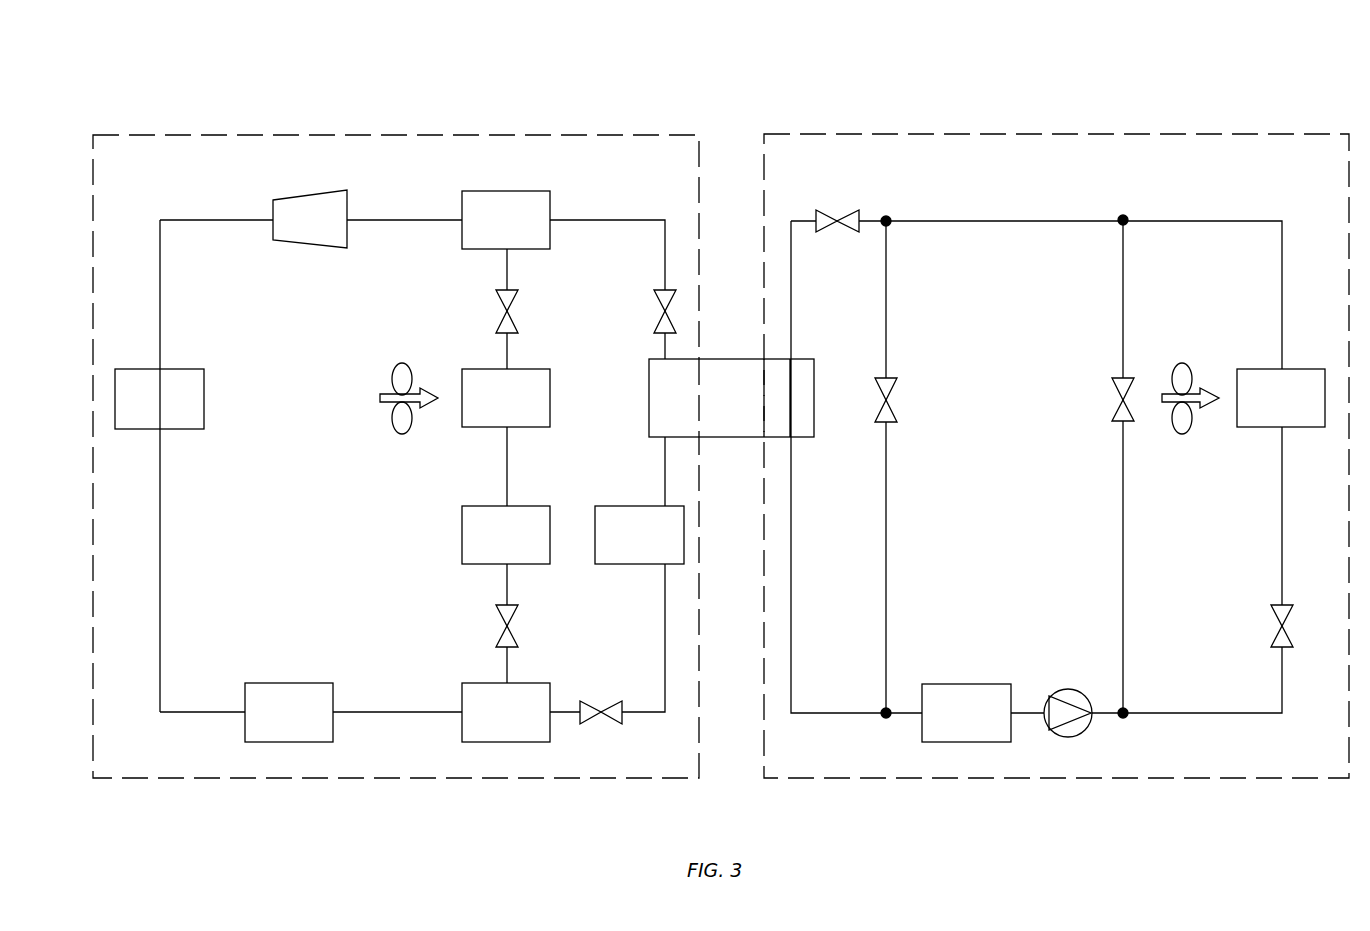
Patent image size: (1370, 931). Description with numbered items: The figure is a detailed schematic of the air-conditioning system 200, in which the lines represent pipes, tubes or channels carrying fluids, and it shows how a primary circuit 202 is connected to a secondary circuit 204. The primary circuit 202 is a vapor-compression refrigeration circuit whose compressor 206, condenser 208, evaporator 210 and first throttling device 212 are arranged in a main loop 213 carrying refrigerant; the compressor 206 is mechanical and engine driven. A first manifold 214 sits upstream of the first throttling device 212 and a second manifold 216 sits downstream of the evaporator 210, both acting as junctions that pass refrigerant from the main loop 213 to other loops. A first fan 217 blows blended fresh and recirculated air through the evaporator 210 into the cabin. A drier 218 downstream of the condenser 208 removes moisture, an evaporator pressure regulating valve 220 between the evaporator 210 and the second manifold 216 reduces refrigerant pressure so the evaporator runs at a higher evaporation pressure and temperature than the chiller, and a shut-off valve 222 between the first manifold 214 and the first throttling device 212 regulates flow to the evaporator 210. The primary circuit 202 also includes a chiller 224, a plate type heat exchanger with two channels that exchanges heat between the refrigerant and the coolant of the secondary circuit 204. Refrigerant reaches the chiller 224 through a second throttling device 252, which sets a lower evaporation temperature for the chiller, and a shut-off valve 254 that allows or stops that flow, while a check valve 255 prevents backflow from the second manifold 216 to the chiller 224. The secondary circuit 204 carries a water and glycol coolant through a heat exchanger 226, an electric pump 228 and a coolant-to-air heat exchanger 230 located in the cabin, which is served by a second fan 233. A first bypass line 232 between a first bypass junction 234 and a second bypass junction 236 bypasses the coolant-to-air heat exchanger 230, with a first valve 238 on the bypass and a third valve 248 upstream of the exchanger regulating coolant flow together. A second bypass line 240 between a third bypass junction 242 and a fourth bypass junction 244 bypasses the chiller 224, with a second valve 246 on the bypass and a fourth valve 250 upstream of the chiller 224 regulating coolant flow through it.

The air-conditioning system 200 is at (184, 93).
The primary circuit 202 is at (430, 135).
The secondary circuit 204 is at (1095, 134).
The compressor 206 is at (310, 219).
The condenser 208 is at (159, 399).
The evaporator 210 is at (506, 398).
The first throttling device 212 is at (506, 535).
The main loop 213 is at (313, 481).
The first manifold 214 is at (506, 712).
The second manifold 216 is at (506, 220).
The first fan 217 is at (392, 369).
The drier 218 is at (289, 712).
The evaporator pressure regulating valve 220 is at (495, 294).
The shut-off valve 222 is at (495, 609).
The chiller 224 is at (731, 398).
The heat exchanger 226 is at (966, 713).
The pump 228 is at (1068, 689).
The coolant-to-air heat exchanger 230 is at (1281, 398).
The first bypass line 232 is at (1123, 296).
The second fan 233 is at (1190, 434).
The first bypass junction 234 is at (1125, 720).
The second bypass junction 236 is at (1126, 214).
The first valve 238 is at (1113, 383).
The second bypass line 240 is at (886, 278).
The third bypass junction 242 is at (888, 215).
The fourth bypass junction 244 is at (886, 720).
The second valve 246 is at (893, 420).
The third valve 248 is at (1272, 609).
The fourth valve 250 is at (838, 211).
The second throttling device 252 is at (639, 535).
The shut-off valve 254 is at (598, 702).
The check valve 255 is at (654, 294).